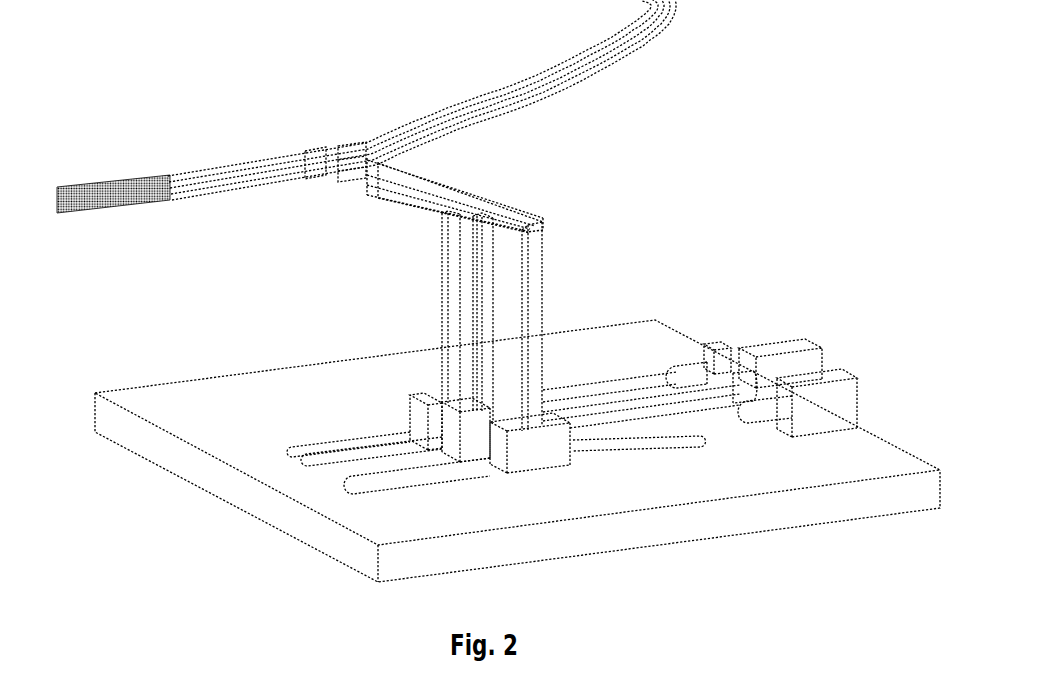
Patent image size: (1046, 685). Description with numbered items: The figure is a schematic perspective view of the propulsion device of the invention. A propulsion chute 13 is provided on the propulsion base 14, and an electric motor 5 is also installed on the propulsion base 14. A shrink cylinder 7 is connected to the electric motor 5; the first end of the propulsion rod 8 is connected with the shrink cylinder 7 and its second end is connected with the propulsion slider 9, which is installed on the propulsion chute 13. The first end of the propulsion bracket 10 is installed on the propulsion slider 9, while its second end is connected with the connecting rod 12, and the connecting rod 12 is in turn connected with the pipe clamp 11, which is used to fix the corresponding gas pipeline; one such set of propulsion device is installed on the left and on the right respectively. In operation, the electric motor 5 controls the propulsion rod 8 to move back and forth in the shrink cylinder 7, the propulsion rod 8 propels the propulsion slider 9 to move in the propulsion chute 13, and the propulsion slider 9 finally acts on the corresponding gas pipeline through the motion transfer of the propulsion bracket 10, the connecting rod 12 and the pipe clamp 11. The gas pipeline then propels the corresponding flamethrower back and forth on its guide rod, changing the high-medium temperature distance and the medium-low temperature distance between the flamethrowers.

The electric motor 5 is at (858, 403).
The shrink cylinder 7 is at (763, 394).
The propulsion rod 8 is at (648, 416).
The propulsion slider 9 is at (551, 441).
The propulsion bracket 10 is at (543, 323).
The pipe clamp 11 is at (322, 155).
The connecting rod 12 is at (357, 165).
The propulsion chute 13 is at (418, 480).
The propulsion base 14 is at (393, 517).